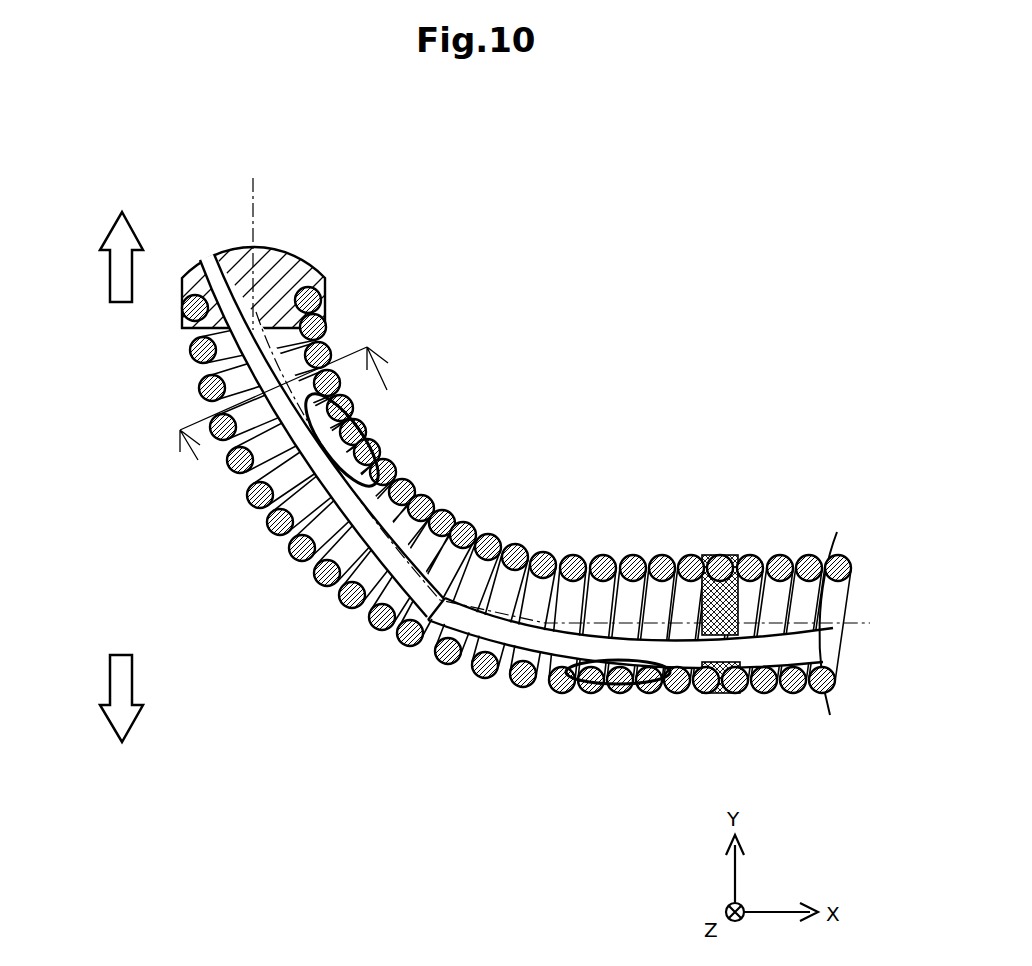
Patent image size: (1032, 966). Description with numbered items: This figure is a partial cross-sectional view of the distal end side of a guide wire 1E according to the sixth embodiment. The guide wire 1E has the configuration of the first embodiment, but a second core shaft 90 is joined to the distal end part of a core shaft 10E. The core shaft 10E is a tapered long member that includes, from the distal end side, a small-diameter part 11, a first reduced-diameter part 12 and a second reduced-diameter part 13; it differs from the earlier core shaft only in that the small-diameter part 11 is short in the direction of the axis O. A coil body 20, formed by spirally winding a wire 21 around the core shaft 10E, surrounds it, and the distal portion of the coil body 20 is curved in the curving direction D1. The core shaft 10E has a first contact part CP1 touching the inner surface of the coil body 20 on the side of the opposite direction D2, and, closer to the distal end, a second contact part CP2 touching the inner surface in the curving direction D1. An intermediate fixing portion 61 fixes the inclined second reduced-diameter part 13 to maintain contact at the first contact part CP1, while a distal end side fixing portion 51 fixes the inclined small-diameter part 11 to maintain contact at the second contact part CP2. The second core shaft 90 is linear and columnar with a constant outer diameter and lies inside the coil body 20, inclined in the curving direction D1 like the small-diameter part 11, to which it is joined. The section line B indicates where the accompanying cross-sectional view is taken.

The guide wire 1E is at (525, 471).
The core shaft 10E is at (567, 634).
The small-diameter part 11 is at (372, 622).
The first reduced-diameter part 12 is at (490, 678).
The second reduced-diameter part 13 is at (765, 653).
The coil body 20 is at (752, 557).
The wire 21 is at (812, 557).
The distal end side fixing portion 51 is at (296, 263).
The intermediate fixing portion 61 is at (718, 697).
The second core shaft 90 is at (257, 303).
The first contact part CP1 is at (585, 697).
The second contact part CP2 is at (398, 478).
The line B- B is at (289, 420).
The axis O is at (253, 168).
The curving direction D1 is at (106, 257).
The opposite direction D2 is at (106, 698).